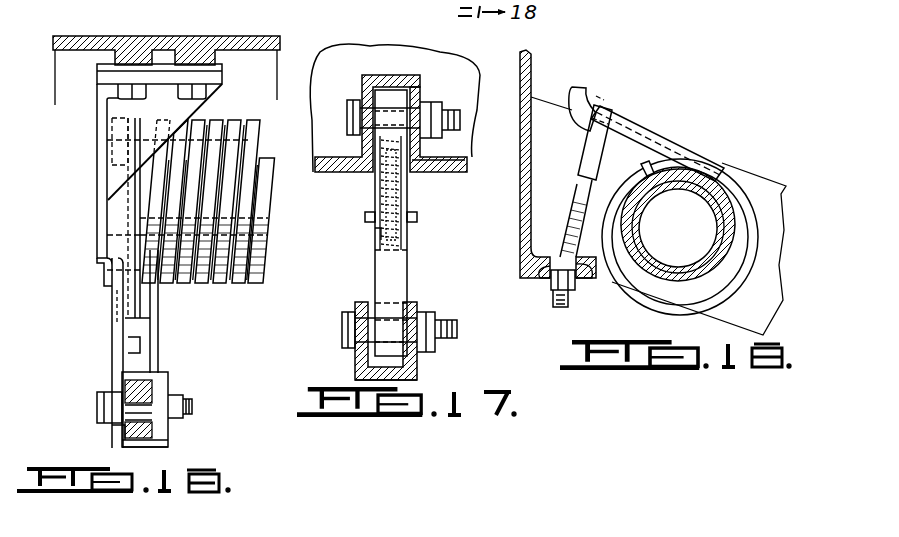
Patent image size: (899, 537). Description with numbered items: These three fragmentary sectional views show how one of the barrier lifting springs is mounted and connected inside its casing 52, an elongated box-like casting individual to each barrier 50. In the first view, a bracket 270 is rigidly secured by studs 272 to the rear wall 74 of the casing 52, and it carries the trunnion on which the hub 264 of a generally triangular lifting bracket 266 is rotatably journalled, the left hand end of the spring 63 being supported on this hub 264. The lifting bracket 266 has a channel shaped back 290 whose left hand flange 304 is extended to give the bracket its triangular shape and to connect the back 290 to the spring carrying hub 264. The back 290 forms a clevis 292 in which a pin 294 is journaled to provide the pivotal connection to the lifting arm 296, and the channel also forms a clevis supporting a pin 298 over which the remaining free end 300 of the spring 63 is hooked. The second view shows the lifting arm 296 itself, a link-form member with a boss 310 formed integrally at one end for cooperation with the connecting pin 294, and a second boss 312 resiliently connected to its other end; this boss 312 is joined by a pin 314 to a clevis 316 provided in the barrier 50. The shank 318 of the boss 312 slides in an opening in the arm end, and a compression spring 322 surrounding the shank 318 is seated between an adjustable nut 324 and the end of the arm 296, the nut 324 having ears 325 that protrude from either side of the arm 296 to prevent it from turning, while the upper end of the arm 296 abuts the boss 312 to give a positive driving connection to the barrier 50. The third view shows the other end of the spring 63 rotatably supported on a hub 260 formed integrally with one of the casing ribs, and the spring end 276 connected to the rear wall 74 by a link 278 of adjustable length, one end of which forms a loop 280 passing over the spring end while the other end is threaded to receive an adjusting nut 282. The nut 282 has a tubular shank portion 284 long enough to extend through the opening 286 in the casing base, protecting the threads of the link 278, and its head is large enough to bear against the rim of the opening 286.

In FIG. 16, the casing 52 is at (122, 40).
In FIG. 18, the casing 52 is at (524, 162).
In FIG. 16, the rear wall 74 is at (218, 62).
In FIG. 18, the rear wall 74 is at (532, 220).
In FIG. 16, the studs 272 is at (180, 95).
In FIG. 16, the spring 63 is at (232, 118).
In FIG. 18, the spring 63 is at (738, 190).
In FIG. 16, the bracket 270 is at (97, 152).
In FIG. 16, the hub 264 is at (113, 277).
In FIG. 16, the left hand flange 304 is at (118, 303).
In FIG. 16, the free end of spring 300 is at (143, 303).
In FIG. 16, the pin 298 is at (142, 340).
In FIG. 16, the lifting bracket 266 is at (160, 358).
In FIG. 17, the lifting bracket 266 is at (420, 368).
In FIG. 16, the pin 294 is at (140, 405).
In FIG. 17, the pin 294 is at (448, 330).
In FIG. 16, the clevis 292 is at (168, 440).
In FIG. 16, the lifting arm 296 is at (128, 428).
In FIG. 17, the lifting arm 296 is at (396, 270).
In FIG. 16, the back 290 is at (148, 455).
In FIG. 17, the back 290 is at (356, 374).
In FIG. 17, the clevis 316 is at (386, 78).
In FIG. 17, the boss 312 is at (398, 100).
In FIG. 17, the pin 314 is at (448, 118).
In FIG. 17, the barrier 50 is at (452, 160).
In FIG. 17, the compression spring 322 is at (400, 187).
In FIG. 17, the ears 325 is at (366, 217).
In FIG. 17, the adjustable nut 324 is at (374, 234).
In FIG. 17, the shank 318 is at (402, 242).
In FIG. 17, the boss 310 is at (394, 306).
In FIG. 18, the loop 280 is at (610, 114).
In FIG. 18, the end of spring 276 is at (640, 140).
In FIG. 18, the hub 260 is at (716, 186).
In FIG. 18, the link 278 is at (580, 200).
In FIG. 18, the tubular shank portion 284 is at (551, 284).
In FIG. 18, the opening 286 is at (590, 282).
In FIG. 18, the adjusting nut 282 is at (556, 308).